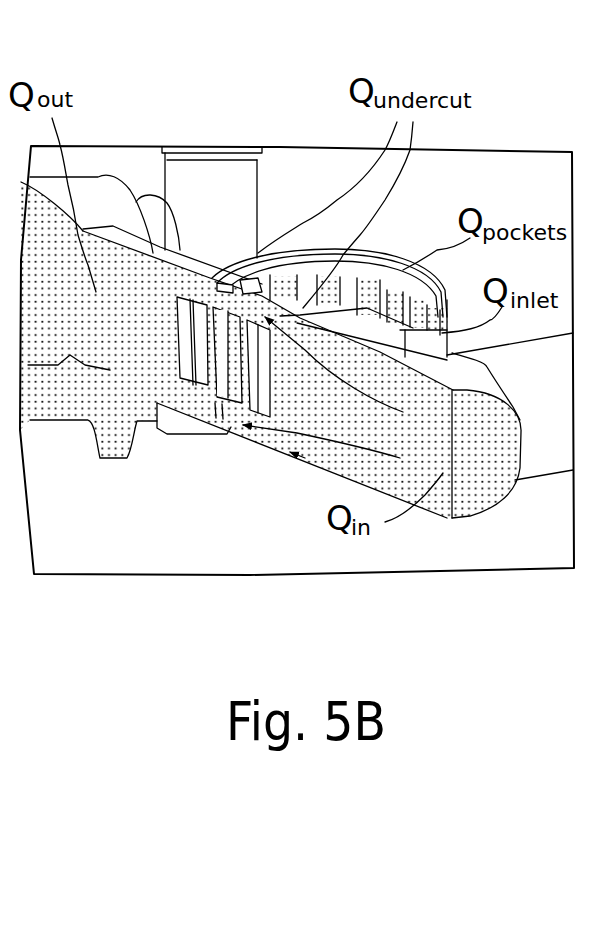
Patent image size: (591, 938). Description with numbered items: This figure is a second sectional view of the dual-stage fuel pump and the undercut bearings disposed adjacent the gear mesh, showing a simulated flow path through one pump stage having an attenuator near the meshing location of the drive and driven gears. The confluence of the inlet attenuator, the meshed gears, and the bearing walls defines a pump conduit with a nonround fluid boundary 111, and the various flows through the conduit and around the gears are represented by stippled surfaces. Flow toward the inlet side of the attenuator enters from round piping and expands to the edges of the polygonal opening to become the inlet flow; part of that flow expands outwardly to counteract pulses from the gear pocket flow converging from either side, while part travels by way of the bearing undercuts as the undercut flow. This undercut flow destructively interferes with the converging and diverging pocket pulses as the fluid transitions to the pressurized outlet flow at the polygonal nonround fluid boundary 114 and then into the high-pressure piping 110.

The high-pressure piping 110 is at (207, 197).
The nonround fluid boundary 111 is at (340, 308).
The polygonal nonround fluid boundary 114 is at (186, 250).